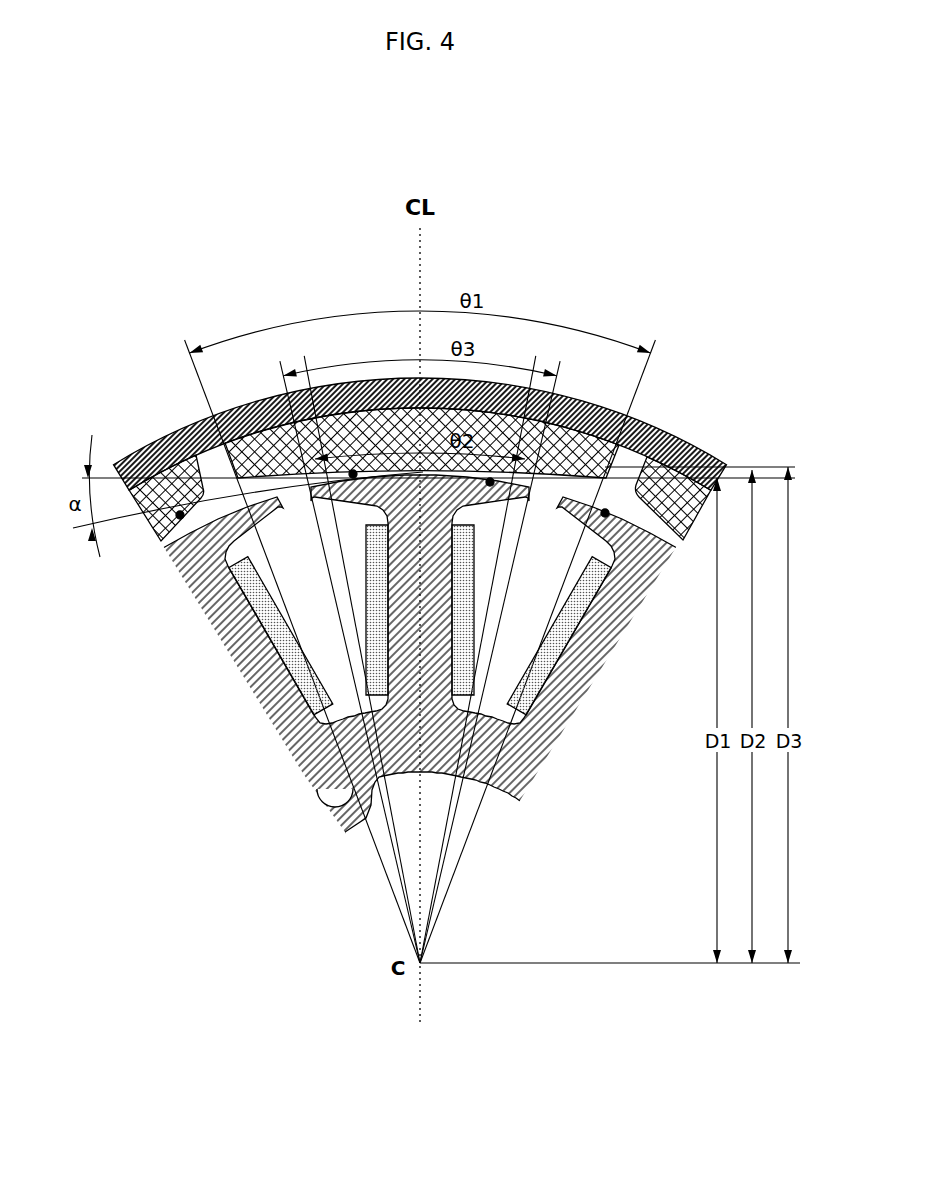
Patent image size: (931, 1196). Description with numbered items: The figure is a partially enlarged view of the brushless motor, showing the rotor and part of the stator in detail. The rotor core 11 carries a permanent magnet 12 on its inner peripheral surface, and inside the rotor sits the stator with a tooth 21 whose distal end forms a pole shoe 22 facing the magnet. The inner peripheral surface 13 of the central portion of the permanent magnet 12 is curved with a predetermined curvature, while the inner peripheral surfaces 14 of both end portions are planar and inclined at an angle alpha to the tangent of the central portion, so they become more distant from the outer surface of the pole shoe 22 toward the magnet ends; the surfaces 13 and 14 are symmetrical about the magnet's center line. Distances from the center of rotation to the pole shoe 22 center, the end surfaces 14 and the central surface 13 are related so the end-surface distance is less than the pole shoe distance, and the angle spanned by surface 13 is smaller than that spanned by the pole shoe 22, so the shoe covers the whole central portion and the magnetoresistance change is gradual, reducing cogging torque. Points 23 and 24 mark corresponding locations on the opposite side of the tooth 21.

The rotor core 11 is at (680, 442).
The permanent magnet 12 is at (612, 440).
The inner peripheral surface of the central portion of the permanent magnet 13 is at (353, 475).
The inner peripheral surfaces of both end portions of the permanent magnet 14 is at (263, 530).
The tooth 21 is at (410, 587).
The pole shoe 22 is at (333, 503).
The second slot opening region 23 is at (490, 482).
The second side tooth shoe 24 is at (605, 513).